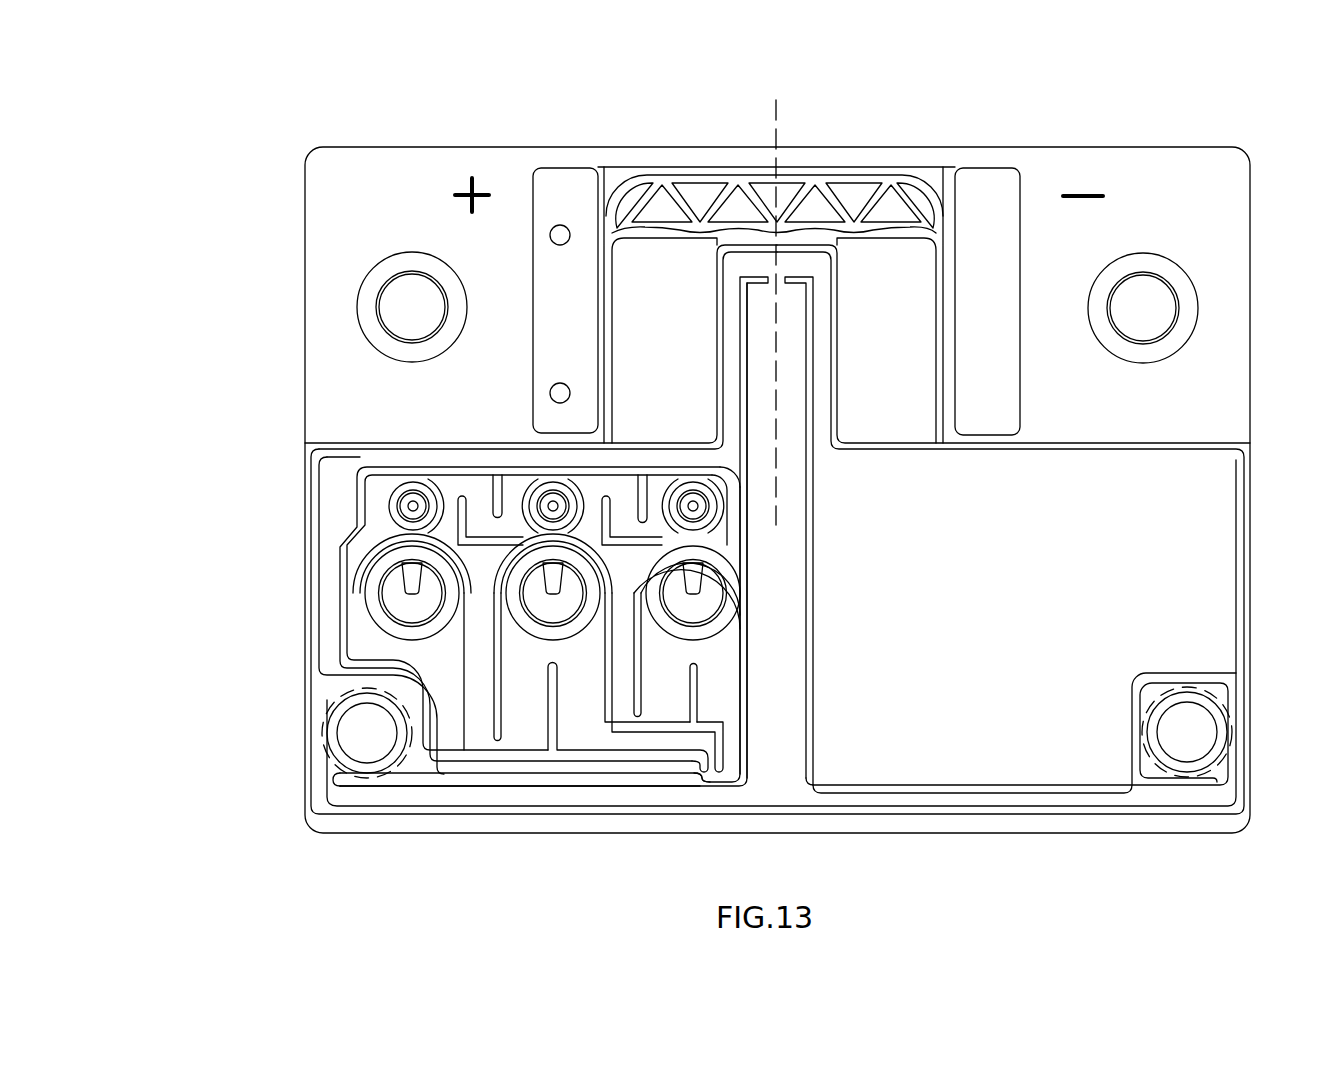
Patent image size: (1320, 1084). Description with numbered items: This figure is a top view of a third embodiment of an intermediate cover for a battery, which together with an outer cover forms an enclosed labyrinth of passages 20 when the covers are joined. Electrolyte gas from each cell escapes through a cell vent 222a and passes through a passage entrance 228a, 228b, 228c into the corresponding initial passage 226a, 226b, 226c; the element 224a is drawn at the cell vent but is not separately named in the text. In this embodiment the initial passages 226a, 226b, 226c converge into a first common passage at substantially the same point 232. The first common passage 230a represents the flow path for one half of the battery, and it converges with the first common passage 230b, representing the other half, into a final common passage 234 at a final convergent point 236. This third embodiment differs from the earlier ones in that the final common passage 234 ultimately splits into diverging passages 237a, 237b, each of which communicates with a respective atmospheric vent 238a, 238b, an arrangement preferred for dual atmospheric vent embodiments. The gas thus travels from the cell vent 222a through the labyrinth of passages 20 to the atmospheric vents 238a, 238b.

The labyrinth of passages 20 is at (266, 630).
The cell vent 222a is at (392, 532).
The bushing 224a is at (385, 508).
The initial passage 226a is at (365, 585).
The initial passage 226b is at (487, 488).
The initial passage 226c is at (588, 415).
The passage entrance 228a is at (358, 478).
The passage entrance 228b is at (544, 462).
The passage entrance 228c is at (690, 445).
The first common passage 230a is at (735, 347).
The first common passage 230b is at (820, 325).
The convergent point 232 is at (703, 778).
The final common passage 234 is at (757, 290).
The final convergent point 236 is at (781, 275).
The diverging passage 237a is at (447, 800).
The diverging passage 237b is at (917, 800).
The atmospheric vent 238a is at (345, 737).
The atmospheric vent 238b is at (1197, 750).